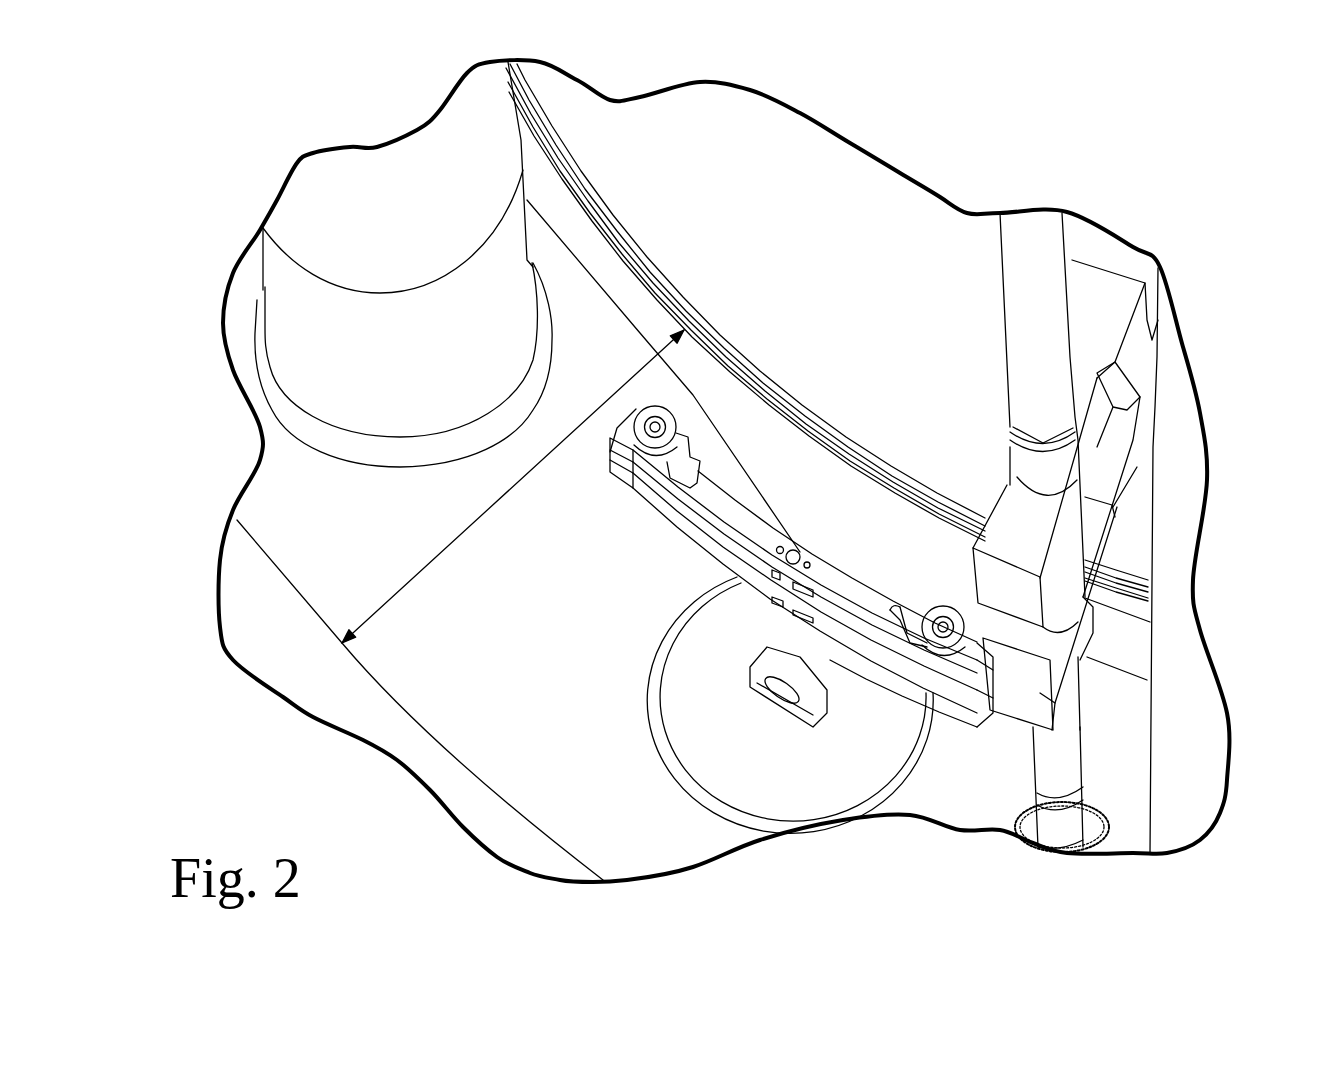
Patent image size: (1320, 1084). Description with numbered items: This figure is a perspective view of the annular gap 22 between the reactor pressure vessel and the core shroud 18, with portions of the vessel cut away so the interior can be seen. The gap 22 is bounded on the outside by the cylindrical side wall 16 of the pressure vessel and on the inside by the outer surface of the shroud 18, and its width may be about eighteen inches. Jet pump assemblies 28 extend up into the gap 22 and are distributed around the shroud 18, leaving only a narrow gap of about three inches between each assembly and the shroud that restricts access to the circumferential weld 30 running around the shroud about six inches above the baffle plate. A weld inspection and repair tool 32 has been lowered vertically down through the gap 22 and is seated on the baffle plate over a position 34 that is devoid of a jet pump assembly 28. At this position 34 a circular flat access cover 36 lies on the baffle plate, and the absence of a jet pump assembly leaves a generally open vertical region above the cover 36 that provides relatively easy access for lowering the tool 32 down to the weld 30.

The cylindrical side wall 16 is at (277, 587).
The core shroud 18 is at (953, 422).
The annular gap 22 is at (500, 493).
The jet pump assembly 28 is at (397, 220).
The circumferential weld 30 is at (937, 497).
The weld inspection and repair tool 32 is at (737, 510).
The position devoid of a jet pump assembly 34 is at (707, 727).
The access cover 36 is at (807, 760).